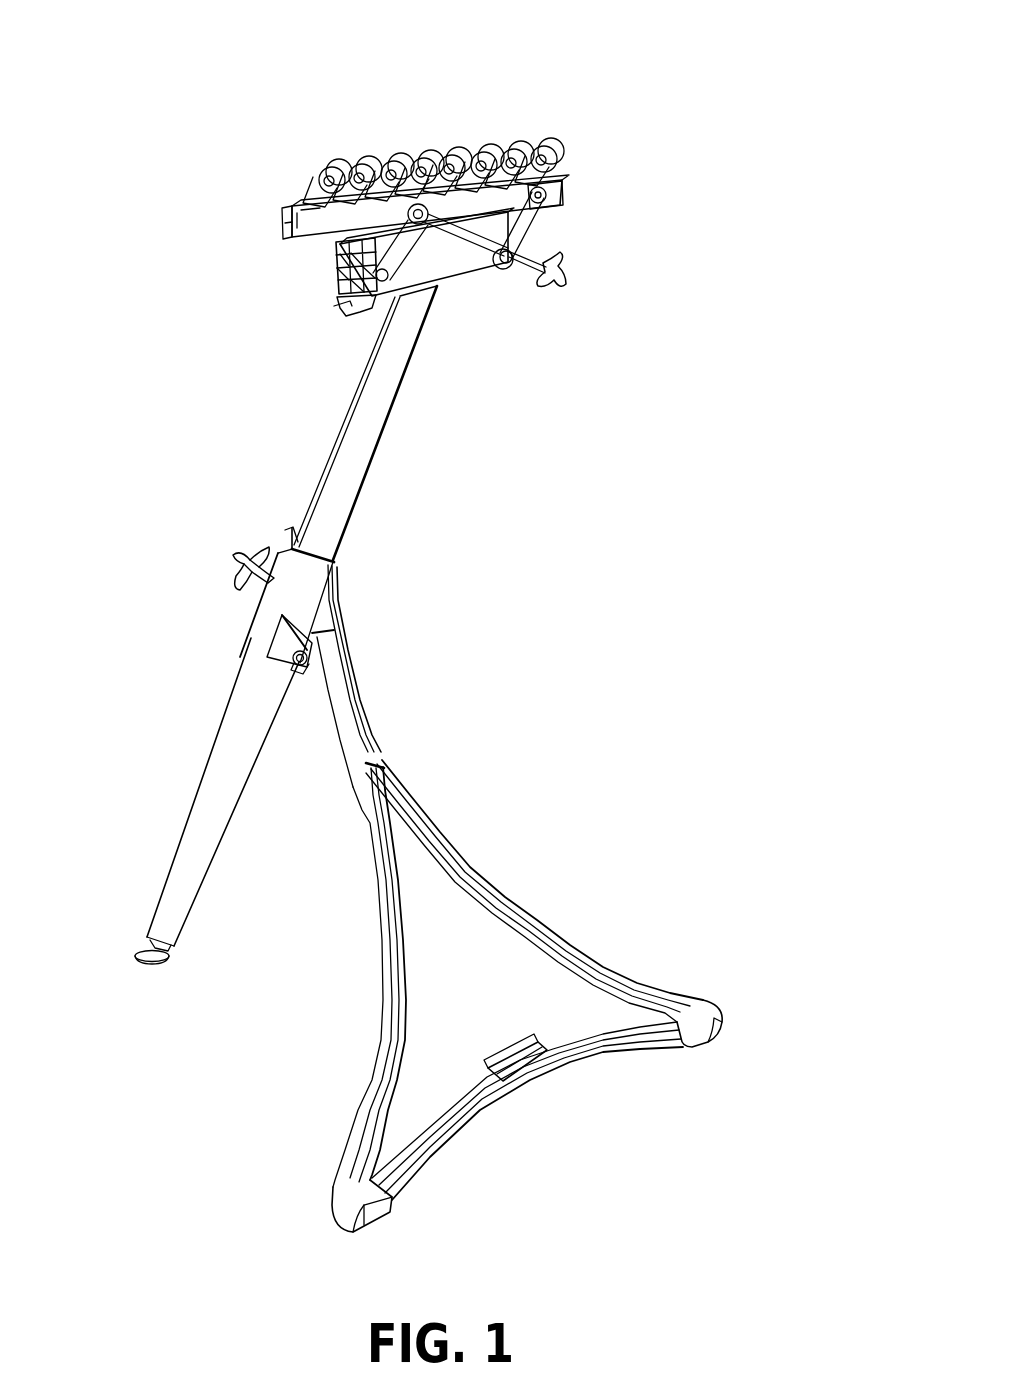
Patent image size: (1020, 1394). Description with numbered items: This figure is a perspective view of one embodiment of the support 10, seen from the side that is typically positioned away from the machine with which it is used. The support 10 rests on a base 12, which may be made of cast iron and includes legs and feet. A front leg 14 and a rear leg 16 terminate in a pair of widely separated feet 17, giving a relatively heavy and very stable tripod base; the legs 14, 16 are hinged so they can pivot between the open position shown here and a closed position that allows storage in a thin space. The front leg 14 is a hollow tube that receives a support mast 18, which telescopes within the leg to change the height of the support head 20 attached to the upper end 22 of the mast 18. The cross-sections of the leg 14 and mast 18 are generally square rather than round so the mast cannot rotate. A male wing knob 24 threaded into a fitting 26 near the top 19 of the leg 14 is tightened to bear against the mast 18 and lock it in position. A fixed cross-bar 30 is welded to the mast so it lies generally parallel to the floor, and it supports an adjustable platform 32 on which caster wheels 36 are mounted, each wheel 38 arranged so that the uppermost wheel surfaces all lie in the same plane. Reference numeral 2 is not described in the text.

The support 10 is at (668, 252).
The support head 20 is at (222, 195).
The wheel 38 is at (393, 155).
The caster wheels 36 is at (471, 152).
The cross-bar 30 is at (477, 275).
The adjustable platform 32 is at (558, 188).
The support mast 18 is at (371, 411).
The upper end 22 is at (424, 324).
The top 19 is at (289, 532).
The base 12 is at (341, 588).
The male wing knob 24 is at (250, 552).
The fitting 26 is at (260, 588).
The support leg 2 is at (213, 745).
The front leg 14 is at (215, 803).
The rear leg 16 is at (380, 750).
The feet 17 is at (711, 1038).